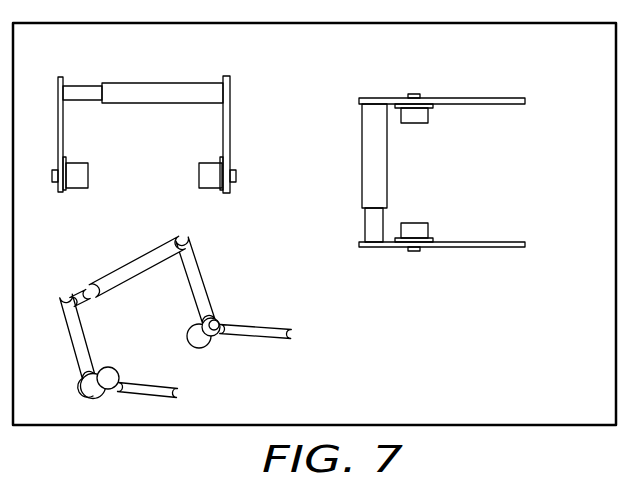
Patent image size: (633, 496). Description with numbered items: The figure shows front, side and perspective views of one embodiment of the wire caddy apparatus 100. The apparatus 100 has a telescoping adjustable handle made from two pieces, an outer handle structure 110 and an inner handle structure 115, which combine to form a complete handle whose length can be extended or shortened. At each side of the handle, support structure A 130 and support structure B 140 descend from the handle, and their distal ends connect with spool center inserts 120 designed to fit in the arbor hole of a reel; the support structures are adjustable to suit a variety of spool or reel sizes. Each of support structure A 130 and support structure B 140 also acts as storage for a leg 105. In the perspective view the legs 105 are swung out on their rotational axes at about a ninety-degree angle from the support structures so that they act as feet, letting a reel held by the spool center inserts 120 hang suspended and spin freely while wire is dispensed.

The wire caddy apparatus 100 is at (171, 57).
The leg 105 is at (157, 385).
The outer handle structure 110 is at (150, 104).
The inner handle structure 115 is at (83, 103).
The spool center insert 120 is at (88, 168).
The support structure A 130 is at (508, 248).
The support structure B 140 is at (231, 128).